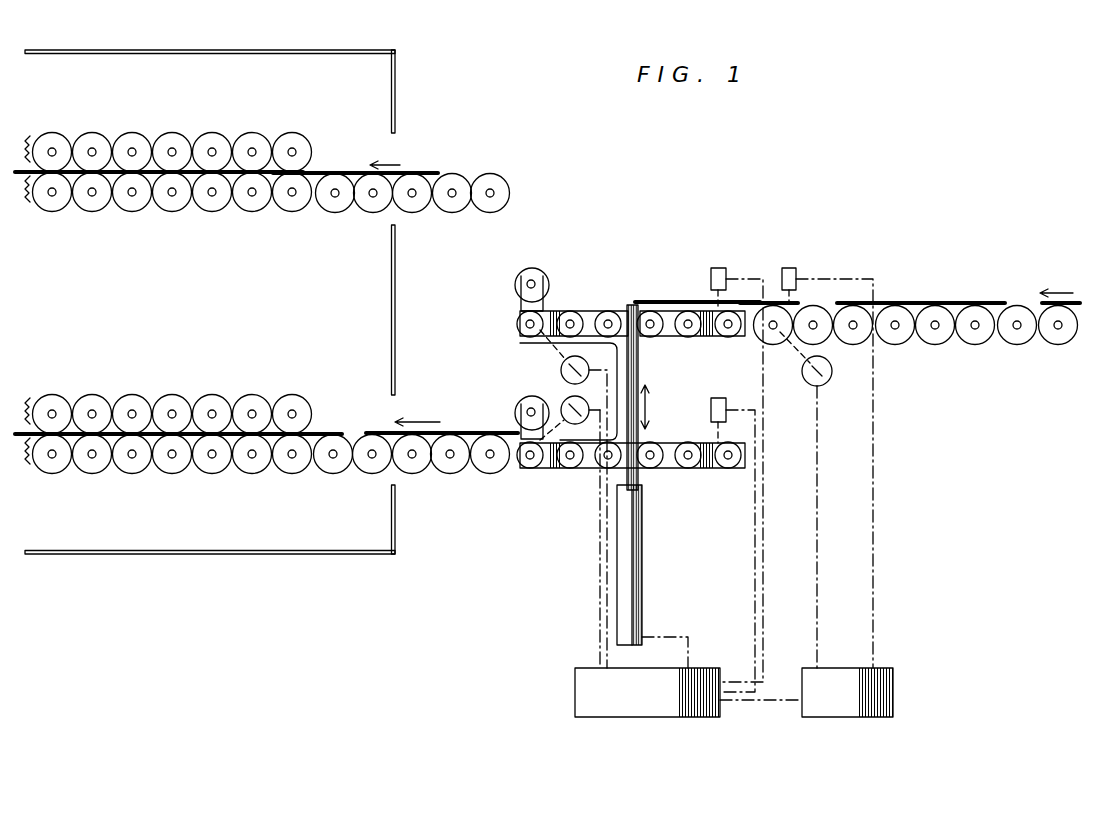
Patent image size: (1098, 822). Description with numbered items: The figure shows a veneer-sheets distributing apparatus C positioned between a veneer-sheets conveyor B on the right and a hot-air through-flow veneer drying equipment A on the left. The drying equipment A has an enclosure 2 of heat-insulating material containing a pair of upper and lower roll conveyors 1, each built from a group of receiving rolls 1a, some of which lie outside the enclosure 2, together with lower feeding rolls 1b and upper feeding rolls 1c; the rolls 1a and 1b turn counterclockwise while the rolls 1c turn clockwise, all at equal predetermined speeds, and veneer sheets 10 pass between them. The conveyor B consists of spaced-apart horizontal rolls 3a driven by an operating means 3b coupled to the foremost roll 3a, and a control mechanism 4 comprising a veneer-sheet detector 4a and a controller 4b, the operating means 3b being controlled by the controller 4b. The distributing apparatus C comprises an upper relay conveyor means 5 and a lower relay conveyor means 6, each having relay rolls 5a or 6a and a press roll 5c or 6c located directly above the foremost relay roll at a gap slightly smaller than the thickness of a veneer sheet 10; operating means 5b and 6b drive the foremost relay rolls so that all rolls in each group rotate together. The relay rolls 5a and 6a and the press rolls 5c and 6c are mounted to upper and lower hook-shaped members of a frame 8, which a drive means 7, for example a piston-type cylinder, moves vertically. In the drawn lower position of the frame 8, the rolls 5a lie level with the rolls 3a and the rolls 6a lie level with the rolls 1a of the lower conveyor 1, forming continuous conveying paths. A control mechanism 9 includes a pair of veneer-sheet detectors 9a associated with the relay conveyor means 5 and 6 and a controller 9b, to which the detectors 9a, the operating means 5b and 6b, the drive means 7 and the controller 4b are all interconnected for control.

The roll conveyor 1 is at (266, 317).
The receiving rolls 1a is at (507, 216).
The lower feeding rolls 1b is at (30, 216).
The upper feeding rolls 1c is at (30, 125).
The enclosure 2 is at (316, 556).
The rolls 3a is at (770, 343).
The operating means 3b is at (822, 384).
The control mechanism 4 is at (864, 471).
The veneer-sheet detector 4a is at (790, 268).
The controller 4b is at (893, 668).
The upper relay conveyor means 5 is at (604, 452).
The relay rolls 5a is at (656, 395).
The operating means 5b is at (561, 368).
The press roll 5c is at (517, 277).
The lower relay conveyor means 6 is at (592, 514).
The relay rolls 6a is at (522, 472).
The operating means 6b is at (561, 405).
The press roll 6c is at (515, 416).
The drive means 7 is at (645, 617).
The frame 8 is at (628, 318).
The control mechanism 9 is at (666, 500).
The veneer-sheet detectors 9a is at (722, 268).
The controller 9b is at (580, 668).
The veneer sheet 10 is at (345, 171).
The hot-air through-flow veneer drying equipment A is at (200, 598).
The veneer-sheets conveyor B is at (992, 392).
The veneer-sheets distributing apparatus C is at (649, 222).